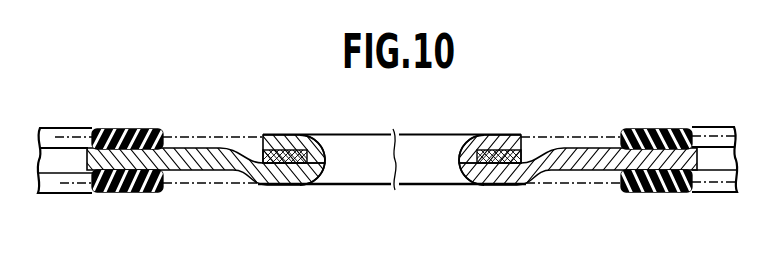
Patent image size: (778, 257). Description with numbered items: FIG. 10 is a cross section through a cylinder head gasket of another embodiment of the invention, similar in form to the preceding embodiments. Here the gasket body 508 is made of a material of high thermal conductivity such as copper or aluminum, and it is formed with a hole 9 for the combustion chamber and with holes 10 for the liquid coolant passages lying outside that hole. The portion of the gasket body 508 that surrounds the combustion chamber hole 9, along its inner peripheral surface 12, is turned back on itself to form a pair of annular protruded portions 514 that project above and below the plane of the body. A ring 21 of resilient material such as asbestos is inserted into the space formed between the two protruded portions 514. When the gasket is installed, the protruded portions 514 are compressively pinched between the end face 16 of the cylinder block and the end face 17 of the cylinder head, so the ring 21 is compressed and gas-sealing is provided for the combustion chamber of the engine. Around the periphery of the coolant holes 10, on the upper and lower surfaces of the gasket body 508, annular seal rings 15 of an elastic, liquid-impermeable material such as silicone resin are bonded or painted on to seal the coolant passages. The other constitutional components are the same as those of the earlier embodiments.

The hole for a combustion chamber 9 is at (342, 177).
The holes for liquid coolant passages 10 is at (74, 151).
The inner peripheral surface 12 is at (326, 153).
The annular seal rings 15 is at (124, 129).
The end face of the cylinder block 16 is at (176, 178).
The end face of the cylinder head 17 is at (190, 136).
The ring of resilient material 21 is at (257, 153).
The high thermal conductivity gasket body 508 is at (218, 175).
The annular protruded portions 514 is at (292, 135).